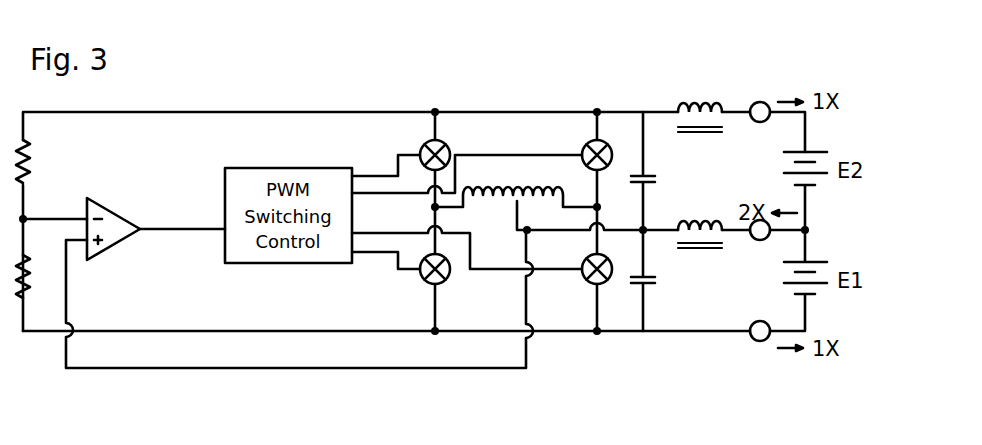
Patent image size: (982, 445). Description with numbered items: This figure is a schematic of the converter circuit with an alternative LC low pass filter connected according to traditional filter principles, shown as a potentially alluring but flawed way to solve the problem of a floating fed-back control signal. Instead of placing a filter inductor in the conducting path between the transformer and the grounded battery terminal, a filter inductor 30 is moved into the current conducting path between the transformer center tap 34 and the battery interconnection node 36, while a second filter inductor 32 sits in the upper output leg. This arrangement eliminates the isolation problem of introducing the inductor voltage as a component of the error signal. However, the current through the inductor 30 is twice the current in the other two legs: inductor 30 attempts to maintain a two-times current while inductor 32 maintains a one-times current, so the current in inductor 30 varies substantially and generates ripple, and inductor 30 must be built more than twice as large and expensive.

The filter inductor 30 is at (690, 223).
The filter inductor 32 is at (683, 103).
The transformer center tap 34 is at (515, 213).
The battery interconnection node 36 is at (808, 230).